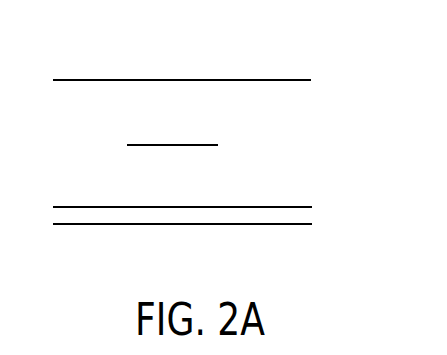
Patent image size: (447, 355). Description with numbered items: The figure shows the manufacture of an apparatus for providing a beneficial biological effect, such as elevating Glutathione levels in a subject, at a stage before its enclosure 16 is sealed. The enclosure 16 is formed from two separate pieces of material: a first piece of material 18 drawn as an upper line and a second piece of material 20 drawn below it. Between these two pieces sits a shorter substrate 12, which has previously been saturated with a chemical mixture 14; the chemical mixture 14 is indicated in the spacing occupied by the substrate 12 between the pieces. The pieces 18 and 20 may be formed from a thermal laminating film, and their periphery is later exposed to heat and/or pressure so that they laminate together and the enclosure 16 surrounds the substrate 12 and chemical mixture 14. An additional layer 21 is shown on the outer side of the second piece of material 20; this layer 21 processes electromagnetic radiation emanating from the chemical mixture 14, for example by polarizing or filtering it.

The substrate 12 is at (208, 144).
The chemical mixture 14 is at (206, 151).
The enclosure 16 is at (57, 85).
The first piece of material 18 is at (195, 80).
The second piece of material 20 is at (190, 208).
The layer 21 is at (108, 226).